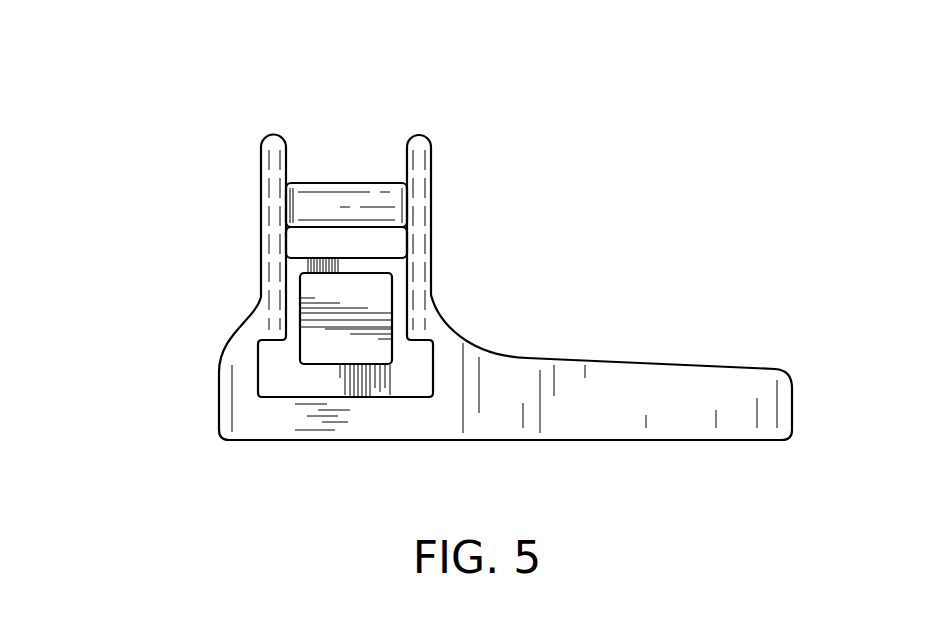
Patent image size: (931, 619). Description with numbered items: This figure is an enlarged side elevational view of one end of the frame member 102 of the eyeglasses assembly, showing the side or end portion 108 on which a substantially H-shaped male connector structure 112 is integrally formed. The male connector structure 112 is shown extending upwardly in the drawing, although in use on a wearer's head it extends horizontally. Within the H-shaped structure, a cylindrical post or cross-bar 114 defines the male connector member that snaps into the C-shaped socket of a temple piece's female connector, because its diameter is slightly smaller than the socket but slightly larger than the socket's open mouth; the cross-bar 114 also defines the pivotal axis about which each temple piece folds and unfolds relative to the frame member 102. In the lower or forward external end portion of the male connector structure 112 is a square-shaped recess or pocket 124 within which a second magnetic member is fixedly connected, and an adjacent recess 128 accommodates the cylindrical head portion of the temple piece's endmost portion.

The frame member 102 is at (577, 417).
The side or end portion 108 is at (248, 415).
The H-shaped male connector structure 112 is at (432, 158).
The cylindrical post or cross-bar 114 is at (342, 193).
The square-shaped recess or pocket 124 is at (366, 297).
The recess 128 is at (353, 383).